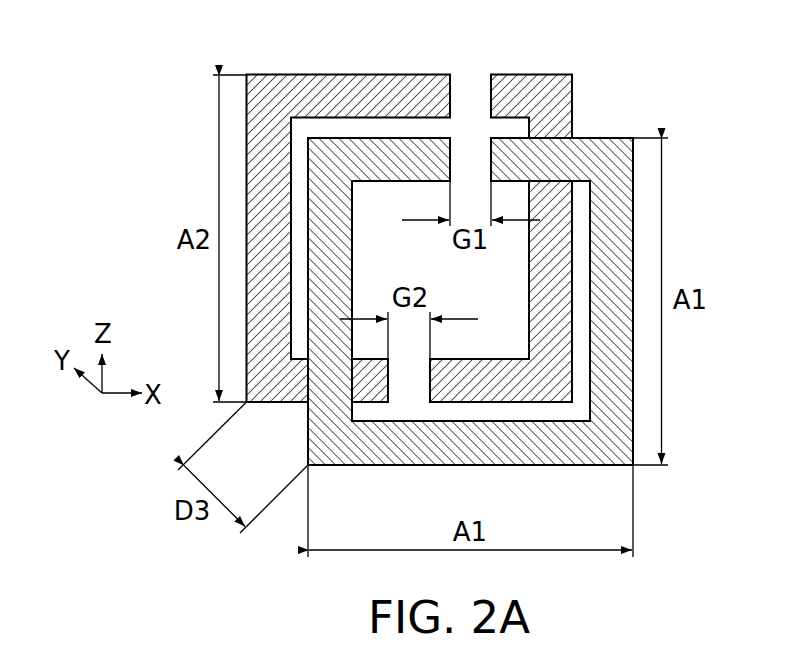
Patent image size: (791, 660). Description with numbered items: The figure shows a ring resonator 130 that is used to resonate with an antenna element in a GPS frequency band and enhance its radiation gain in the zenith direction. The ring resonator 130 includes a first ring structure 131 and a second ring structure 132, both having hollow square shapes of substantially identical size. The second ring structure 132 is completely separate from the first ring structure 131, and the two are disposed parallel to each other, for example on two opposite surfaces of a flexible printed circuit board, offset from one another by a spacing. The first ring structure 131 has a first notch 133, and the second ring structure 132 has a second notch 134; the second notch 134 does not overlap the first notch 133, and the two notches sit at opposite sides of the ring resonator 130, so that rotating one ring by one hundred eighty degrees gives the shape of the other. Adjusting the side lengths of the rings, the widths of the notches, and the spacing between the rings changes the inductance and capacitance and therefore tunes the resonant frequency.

The ring resonator 130 is at (132, 40).
The first ring structure 131 is at (613, 147).
The second ring structure 132 is at (370, 85).
The first notch 133 is at (469, 160).
The second notch 134 is at (410, 380).